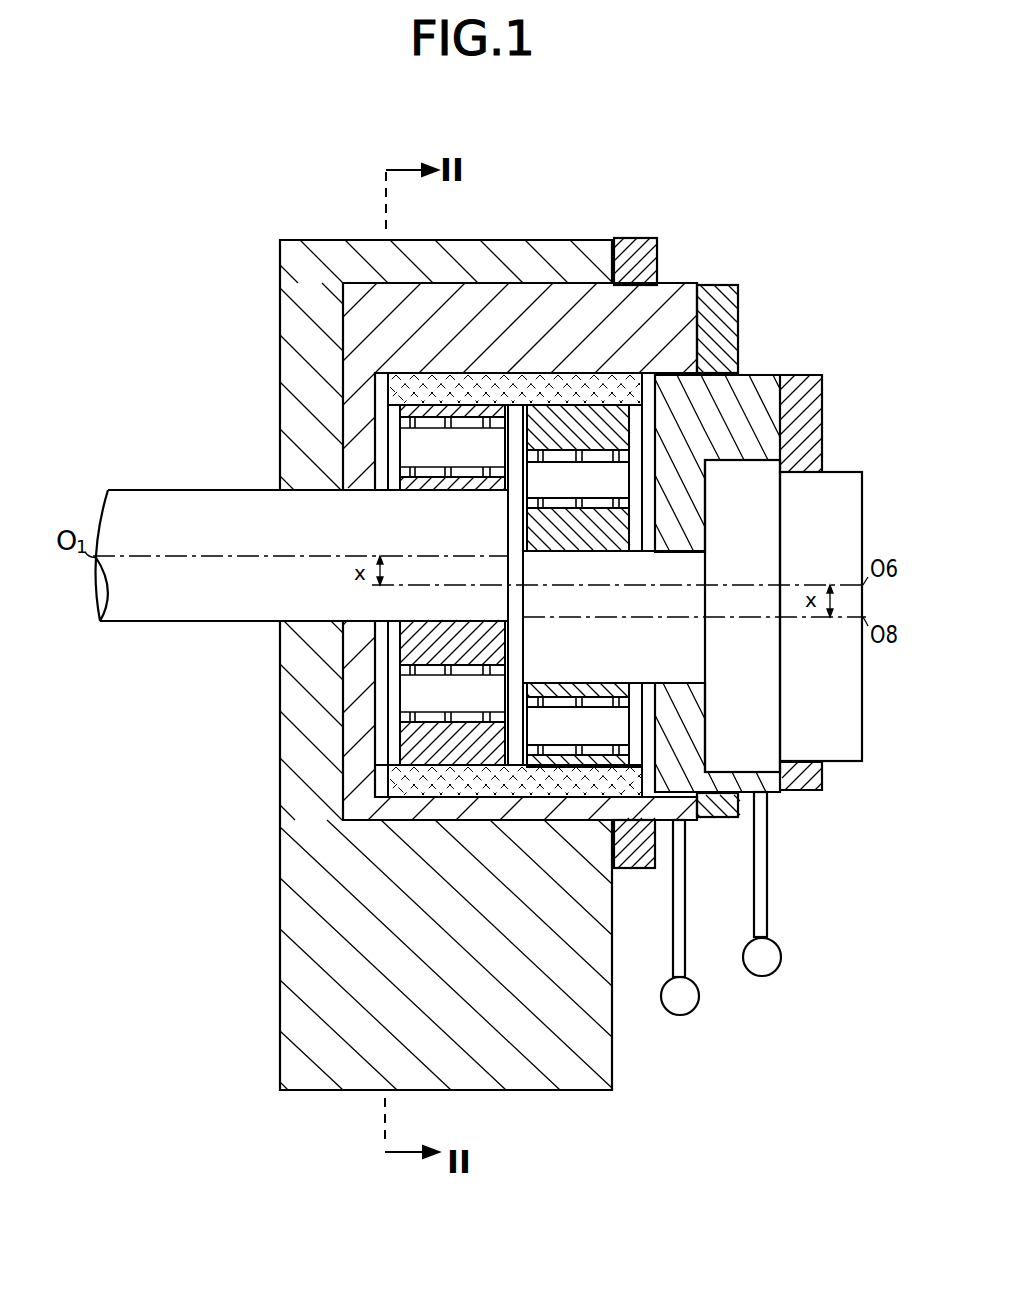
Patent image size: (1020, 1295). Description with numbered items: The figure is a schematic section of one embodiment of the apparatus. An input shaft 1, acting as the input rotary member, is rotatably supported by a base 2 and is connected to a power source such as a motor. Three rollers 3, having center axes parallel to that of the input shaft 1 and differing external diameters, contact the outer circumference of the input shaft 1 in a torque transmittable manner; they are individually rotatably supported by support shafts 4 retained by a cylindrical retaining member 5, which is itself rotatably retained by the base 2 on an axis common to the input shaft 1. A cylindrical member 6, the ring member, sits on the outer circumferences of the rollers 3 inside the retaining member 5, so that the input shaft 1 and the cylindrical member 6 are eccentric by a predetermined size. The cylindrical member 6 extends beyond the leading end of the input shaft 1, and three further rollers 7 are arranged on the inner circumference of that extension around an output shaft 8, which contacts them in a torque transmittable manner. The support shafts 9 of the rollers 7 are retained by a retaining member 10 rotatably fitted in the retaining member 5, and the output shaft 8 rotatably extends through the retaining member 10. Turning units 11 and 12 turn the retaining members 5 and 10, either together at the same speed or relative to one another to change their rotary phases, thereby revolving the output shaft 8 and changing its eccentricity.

The input shaft 1 is at (167, 603).
The base 2 is at (540, 1063).
The rollers 3 is at (400, 418).
The support shafts 4 is at (395, 447).
The retaining member 5 is at (513, 298).
The cylindrical member 6 is at (563, 723).
The rollers 7 is at (603, 420).
The output shaft 8 is at (834, 732).
The support shafts 9 is at (612, 477).
The retaining member 10 is at (737, 410).
The turning unit 11 is at (684, 999).
The turning unit 12 is at (763, 962).